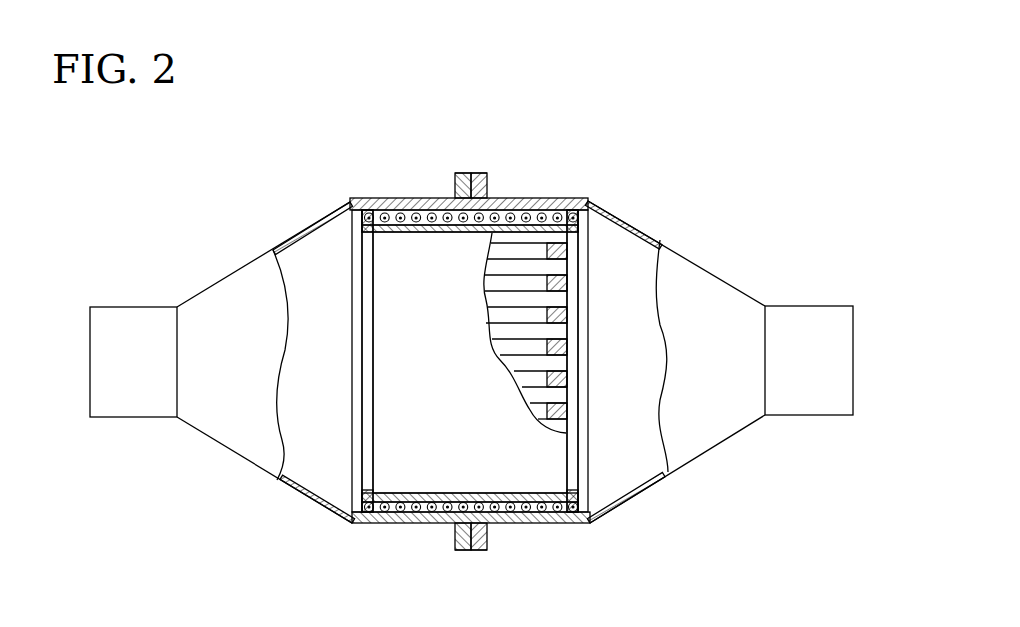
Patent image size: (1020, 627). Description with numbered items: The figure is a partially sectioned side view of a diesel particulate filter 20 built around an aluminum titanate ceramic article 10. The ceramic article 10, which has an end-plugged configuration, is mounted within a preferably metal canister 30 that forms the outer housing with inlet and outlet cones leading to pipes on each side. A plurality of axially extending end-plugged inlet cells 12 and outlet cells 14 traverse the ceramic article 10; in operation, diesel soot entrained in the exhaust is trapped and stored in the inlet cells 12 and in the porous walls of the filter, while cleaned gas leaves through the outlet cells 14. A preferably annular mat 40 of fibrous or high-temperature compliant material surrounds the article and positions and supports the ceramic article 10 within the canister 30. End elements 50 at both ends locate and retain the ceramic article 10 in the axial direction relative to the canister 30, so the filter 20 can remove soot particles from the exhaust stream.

The ceramic article 10 is at (585, 426).
The inlet cells 12 is at (532, 315).
The outlet cells 14 is at (542, 300).
The diesel particulate filter 20 is at (503, 188).
The canister 30 is at (417, 523).
The mat 40 is at (535, 523).
The end elements 50 is at (580, 250).